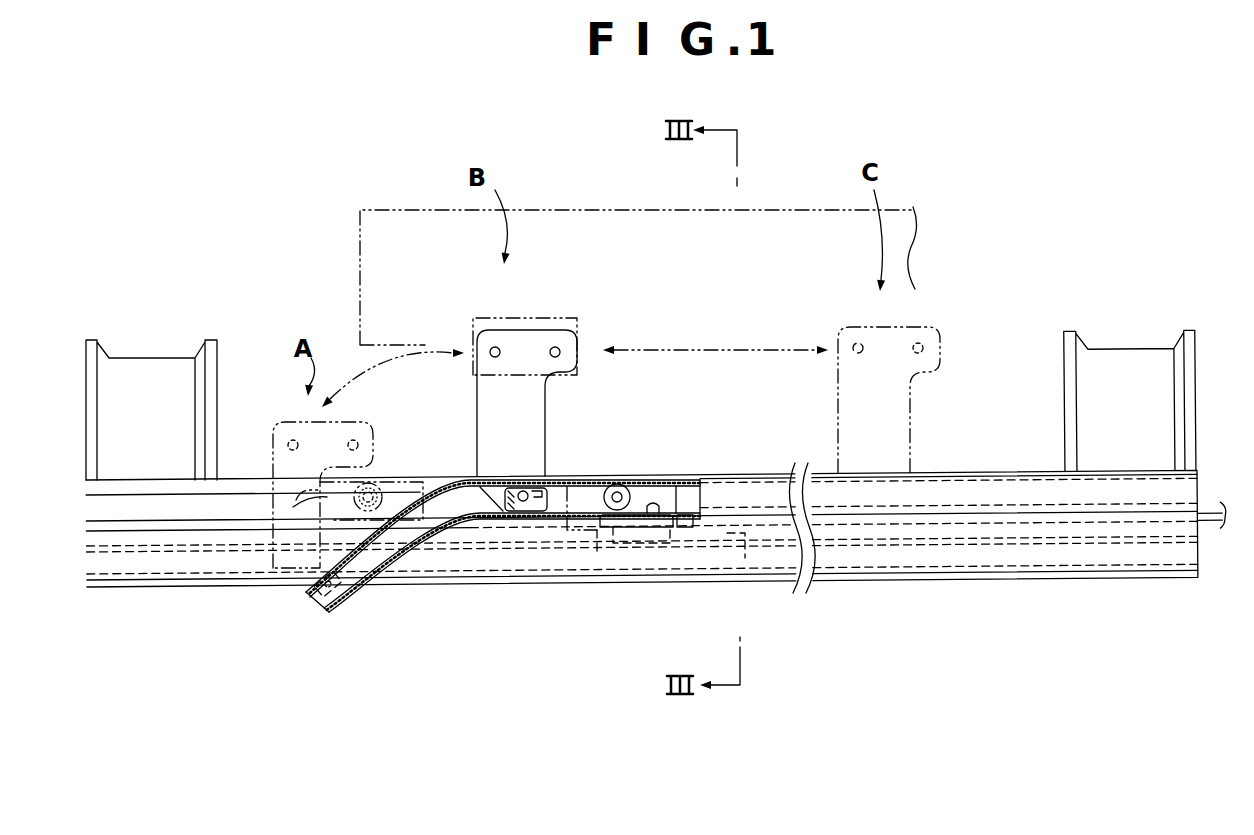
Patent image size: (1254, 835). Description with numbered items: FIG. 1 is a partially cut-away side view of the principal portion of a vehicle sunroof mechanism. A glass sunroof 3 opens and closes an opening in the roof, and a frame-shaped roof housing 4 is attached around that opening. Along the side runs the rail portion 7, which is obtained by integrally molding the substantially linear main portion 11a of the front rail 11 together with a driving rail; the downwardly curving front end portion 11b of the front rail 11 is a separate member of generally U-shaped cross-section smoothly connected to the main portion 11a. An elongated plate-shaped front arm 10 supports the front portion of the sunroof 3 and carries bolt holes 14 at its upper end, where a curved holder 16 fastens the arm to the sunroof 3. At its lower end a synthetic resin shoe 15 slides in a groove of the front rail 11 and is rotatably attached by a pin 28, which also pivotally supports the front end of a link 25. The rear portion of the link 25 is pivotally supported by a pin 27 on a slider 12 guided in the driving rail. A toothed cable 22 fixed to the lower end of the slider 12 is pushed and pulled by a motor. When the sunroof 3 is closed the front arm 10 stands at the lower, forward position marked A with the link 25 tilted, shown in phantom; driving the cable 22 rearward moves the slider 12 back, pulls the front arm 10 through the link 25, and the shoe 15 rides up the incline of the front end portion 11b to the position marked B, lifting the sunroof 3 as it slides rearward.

The sunroof 3 is at (683, 208).
The roof housing 4 is at (177, 340).
The rail portion 7 is at (952, 459).
The front arm 10 is at (273, 440).
The front rail 11 is at (519, 512).
The main portion of front rail 11a is at (664, 527).
The front end portion of front rail 11b is at (405, 535).
The slider 12 is at (266, 556).
The bolt holes 14 is at (554, 347).
The shoe 15 is at (360, 578).
The holder 16 is at (486, 318).
The toothed cable 22 is at (474, 552).
The link 25 is at (362, 565).
The pin 27 is at (620, 474).
The pin 28 is at (532, 473).